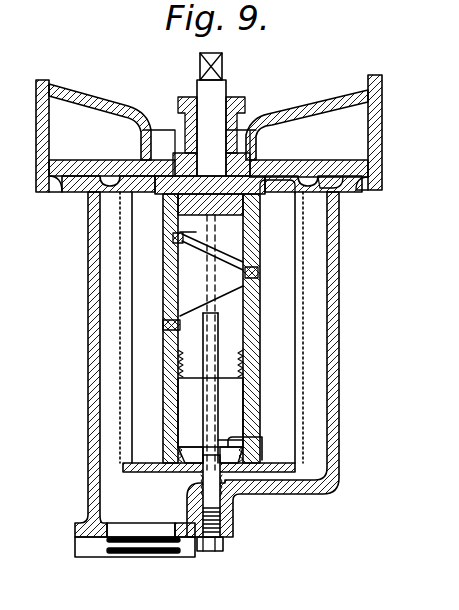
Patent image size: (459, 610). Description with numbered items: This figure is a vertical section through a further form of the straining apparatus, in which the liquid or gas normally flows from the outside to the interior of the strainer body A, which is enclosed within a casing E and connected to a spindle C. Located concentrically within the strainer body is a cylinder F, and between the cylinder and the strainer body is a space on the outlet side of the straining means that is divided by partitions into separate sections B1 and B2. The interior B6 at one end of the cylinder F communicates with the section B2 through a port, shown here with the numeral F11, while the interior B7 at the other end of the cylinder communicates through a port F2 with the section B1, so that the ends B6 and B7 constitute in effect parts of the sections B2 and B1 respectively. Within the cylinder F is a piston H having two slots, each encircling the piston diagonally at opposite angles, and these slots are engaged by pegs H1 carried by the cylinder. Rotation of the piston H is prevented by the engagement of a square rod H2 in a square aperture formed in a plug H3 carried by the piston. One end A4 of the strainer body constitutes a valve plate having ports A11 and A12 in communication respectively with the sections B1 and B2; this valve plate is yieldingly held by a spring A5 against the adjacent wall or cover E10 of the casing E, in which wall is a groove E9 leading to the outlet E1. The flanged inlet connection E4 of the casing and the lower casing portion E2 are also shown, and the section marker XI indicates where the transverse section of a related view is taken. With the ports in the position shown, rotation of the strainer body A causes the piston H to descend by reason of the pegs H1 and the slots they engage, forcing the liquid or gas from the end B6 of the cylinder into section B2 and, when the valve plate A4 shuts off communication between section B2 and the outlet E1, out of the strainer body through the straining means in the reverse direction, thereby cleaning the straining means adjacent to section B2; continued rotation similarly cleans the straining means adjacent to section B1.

The inlet pipe flange E4 is at (65, 118).
The wall or cover E10 is at (146, 118).
The spindle C is at (205, 96).
The valve plate A4 is at (243, 185).
The groove E9 is at (278, 168).
The outlet E1 is at (363, 128).
The section line XI is at (113, 170).
The port F2 is at (168, 175).
The port A11 is at (112, 190).
The strainer body A is at (125, 243).
The interior of cylinder end B7 is at (173, 238).
The section B1 is at (133, 315).
The pegs H1 is at (352, 320).
The piston H is at (170, 370).
The square rod H2 is at (200, 404).
The cylinder F is at (167, 427).
The casing left wall E2 is at (107, 490).
The port A12 is at (333, 190).
The section B2 is at (280, 257).
The casing E is at (338, 280).
The plug H3 is at (233, 362).
The interior of cylinder end B6 is at (243, 420).
The bracket F11 is at (250, 440).
The spring A5 is at (237, 505).